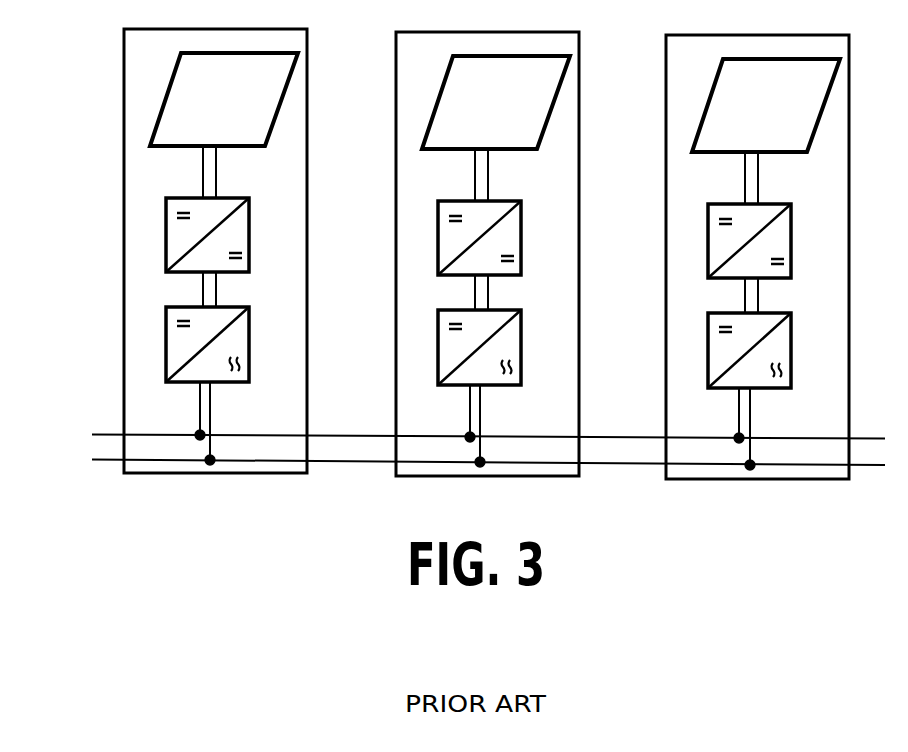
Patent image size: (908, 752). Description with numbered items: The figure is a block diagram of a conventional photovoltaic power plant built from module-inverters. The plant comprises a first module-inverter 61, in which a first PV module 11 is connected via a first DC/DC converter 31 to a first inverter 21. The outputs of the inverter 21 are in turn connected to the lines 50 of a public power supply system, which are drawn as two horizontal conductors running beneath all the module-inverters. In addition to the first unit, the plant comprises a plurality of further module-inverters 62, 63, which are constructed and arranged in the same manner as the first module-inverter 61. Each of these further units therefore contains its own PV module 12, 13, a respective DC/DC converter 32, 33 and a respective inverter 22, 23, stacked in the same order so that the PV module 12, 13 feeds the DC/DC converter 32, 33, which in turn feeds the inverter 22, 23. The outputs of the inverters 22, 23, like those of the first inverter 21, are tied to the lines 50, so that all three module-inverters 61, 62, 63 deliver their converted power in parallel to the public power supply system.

The first PV module 11 is at (163, 105).
The PV module 12 is at (452, 102).
The PV module 13 is at (722, 105).
The first inverter 21 is at (166, 355).
The inverter 22 is at (428, 347).
The inverter 23 is at (698, 350).
The first DC/DC converter 31 is at (166, 245).
The DC/DC converter 32 is at (428, 238).
The DC/DC converter 33 is at (698, 241).
The lines of a public power supply system 50 is at (867, 437).
The first module-inverter 61 is at (185, 251).
The module-inverter 62 is at (457, 254).
The module-inverter 63 is at (727, 257).